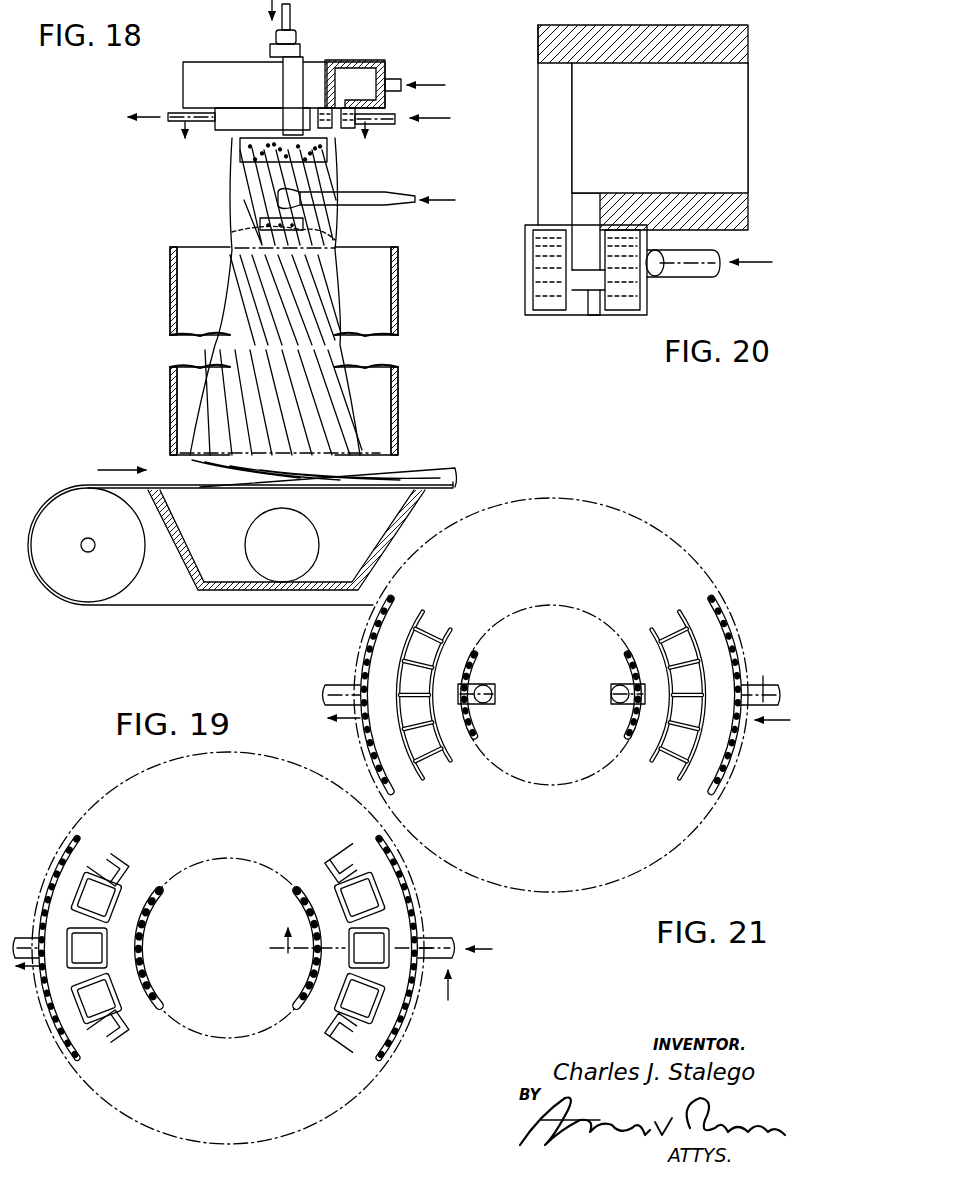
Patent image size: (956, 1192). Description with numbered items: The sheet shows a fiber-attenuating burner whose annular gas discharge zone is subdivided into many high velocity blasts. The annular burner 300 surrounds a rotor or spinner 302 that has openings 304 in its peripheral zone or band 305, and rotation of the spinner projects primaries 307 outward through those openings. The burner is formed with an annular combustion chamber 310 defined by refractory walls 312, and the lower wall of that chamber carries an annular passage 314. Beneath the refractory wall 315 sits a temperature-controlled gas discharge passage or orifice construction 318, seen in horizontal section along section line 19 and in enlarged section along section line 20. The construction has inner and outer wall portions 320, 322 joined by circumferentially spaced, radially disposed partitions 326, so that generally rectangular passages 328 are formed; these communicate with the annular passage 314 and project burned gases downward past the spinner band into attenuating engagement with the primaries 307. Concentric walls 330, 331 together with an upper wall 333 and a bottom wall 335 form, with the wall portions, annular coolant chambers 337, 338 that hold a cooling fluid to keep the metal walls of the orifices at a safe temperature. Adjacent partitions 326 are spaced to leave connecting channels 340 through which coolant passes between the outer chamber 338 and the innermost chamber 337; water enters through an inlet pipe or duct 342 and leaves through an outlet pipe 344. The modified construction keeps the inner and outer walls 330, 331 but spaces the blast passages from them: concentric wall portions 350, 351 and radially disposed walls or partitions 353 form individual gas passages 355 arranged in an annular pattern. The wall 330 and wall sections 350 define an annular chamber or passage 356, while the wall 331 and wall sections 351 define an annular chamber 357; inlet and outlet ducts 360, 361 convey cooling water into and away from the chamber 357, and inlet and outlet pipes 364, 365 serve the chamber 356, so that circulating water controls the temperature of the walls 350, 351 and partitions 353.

In FIG. 18, the section line 19— 19 is at (280, 143).
In FIG. 19, the section line 20— 20 is at (366, 977).
In FIG. 18, the annular burner 300 is at (355, 58).
In FIG. 20, the annular burner 300 is at (540, 32).
In FIG. 18, the rotor or spinner 302 is at (292, 130).
In FIG. 18, the openings 304 is at (270, 142).
In FIG. 18, the peripheral zone or band 305 is at (270, 160).
In FIG. 18, the primaries 307 is at (330, 150).
In FIG. 18, the annular combustion chamber 310 is at (352, 78).
In FIG. 20, the annular combustion chamber 310 is at (715, 126).
In FIG. 20, the refractory walls 312 is at (556, 55).
In FIG. 18, the annular passage 314 is at (345, 98).
In FIG. 20, the annular passage 314 is at (590, 198).
In FIG. 20, the refractory wall 315 is at (714, 212).
In FIG. 18, the gas discharge passage or orifice construction 318 is at (215, 132).
In FIG. 20, the gas discharge passage or orifice construction 318 is at (530, 316).
In FIG. 19, the gas discharge passage or orifice construction 318 is at (416, 1031).
In FIG. 18, the inner wall portion 320 is at (325, 118).
In FIG. 20, the inner wall portion 320 is at (548, 247).
In FIG. 19, the inner wall portion 320 is at (112, 903).
In FIG. 18, the outer wall portion 322 is at (348, 118).
In FIG. 20, the outer wall portion 322 is at (610, 256).
In FIG. 19, the outer wall portion 322 is at (392, 948).
In FIG. 20, the radially disposed partitions 326 is at (598, 300).
In FIG. 19, the radially disposed partitions 326 is at (340, 866).
In FIG. 20, the generally rectangular passages 328 is at (582, 312).
In FIG. 19, the generally rectangular passages 328 is at (372, 898).
In FIG. 20, the inner concentric wall 330 is at (527, 272).
In FIG. 21, the inner concentric wall 330 is at (468, 713).
In FIG. 19, the inner concentric wall 330 is at (136, 957).
In FIG. 20, the outer concentric wall 331 is at (662, 252).
In FIG. 21, the outer concentric wall 331 is at (730, 742).
In FIG. 19, the outer concentric wall 331 is at (396, 1060).
In FIG. 20, the upper wall 333 is at (540, 232).
In FIG. 20, the bottom wall 335 is at (586, 296).
In FIG. 20, the inner coolant chamber 337 is at (546, 286).
In FIG. 19, the inner coolant chamber 337 is at (130, 980).
In FIG. 20, the outer coolant chamber 338 is at (632, 300).
In FIG. 19, the outer coolant chamber 338 is at (390, 1028).
In FIG. 19, the connecting channels or passages 340 is at (344, 852).
In FIG. 18, the inlet pipe or duct 342 is at (390, 122).
In FIG. 20, the inlet pipe or duct 342 is at (706, 276).
In FIG. 21, the inlet pipe or duct 342 is at (763, 702).
In FIG. 19, the inlet pipe or duct 342 is at (452, 954).
In FIG. 18, the outlet pipe 344 is at (172, 121).
In FIG. 19, the outlet pipe 344 is at (28, 938).
In FIG. 21, the inner concentric wall portion 350 is at (445, 653).
In FIG. 21, the outer concentric wall portion 351 is at (700, 642).
In FIG. 21, the radially disposed walls or partitions 353 is at (720, 790).
In FIG. 21, the individual gas passages 355 is at (422, 675).
In FIG. 21, the inner annular chamber or passage 356 is at (457, 667).
In FIG. 21, the outer annular chamber 357 is at (716, 760).
In FIG. 21, the inlet duct 360 is at (759, 677).
In FIG. 21, the outlet duct 361 is at (348, 688).
In FIG. 21, the inlet pipe 364 is at (612, 698).
In FIG. 21, the outlet pipe 365 is at (495, 690).